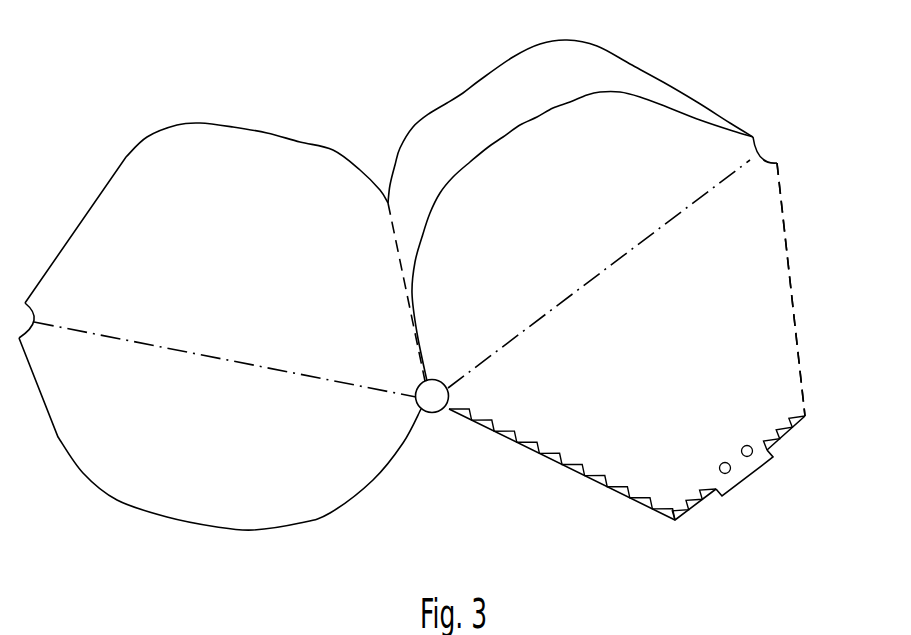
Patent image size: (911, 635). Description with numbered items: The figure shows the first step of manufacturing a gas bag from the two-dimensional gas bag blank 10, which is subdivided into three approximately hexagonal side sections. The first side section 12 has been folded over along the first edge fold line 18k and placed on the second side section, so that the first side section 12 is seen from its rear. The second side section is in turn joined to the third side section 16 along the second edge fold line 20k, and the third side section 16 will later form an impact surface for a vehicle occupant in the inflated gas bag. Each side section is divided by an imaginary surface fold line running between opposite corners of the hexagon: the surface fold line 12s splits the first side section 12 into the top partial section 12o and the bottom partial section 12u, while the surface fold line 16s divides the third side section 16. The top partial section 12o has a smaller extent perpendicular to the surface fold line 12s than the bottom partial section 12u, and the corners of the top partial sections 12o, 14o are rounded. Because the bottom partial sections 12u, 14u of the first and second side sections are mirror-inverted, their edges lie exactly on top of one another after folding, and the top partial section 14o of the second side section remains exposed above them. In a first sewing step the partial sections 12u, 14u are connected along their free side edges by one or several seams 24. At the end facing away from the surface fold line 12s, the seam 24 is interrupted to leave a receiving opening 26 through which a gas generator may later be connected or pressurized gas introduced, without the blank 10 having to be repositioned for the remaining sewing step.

The gas bag blank 10 is at (188, 97).
The first side section 12 is at (674, 367).
The top partial section of the first side section 12o is at (579, 223).
The surface fold line of the first side section 12s is at (565, 298).
The bottom partial section of the first side section 12u is at (762, 257).
The top partial section of the second side section 14o is at (488, 138).
The bottom partial section of the second side section 14u is at (765, 150).
The third side section 16 is at (241, 282).
The surface fold line of the third side section 16s is at (327, 381).
The first edge fold line 18k is at (797, 337).
The second edge fold line 20k is at (398, 245).
The seam 24 is at (522, 445).
The receiving opening 26 is at (765, 480).